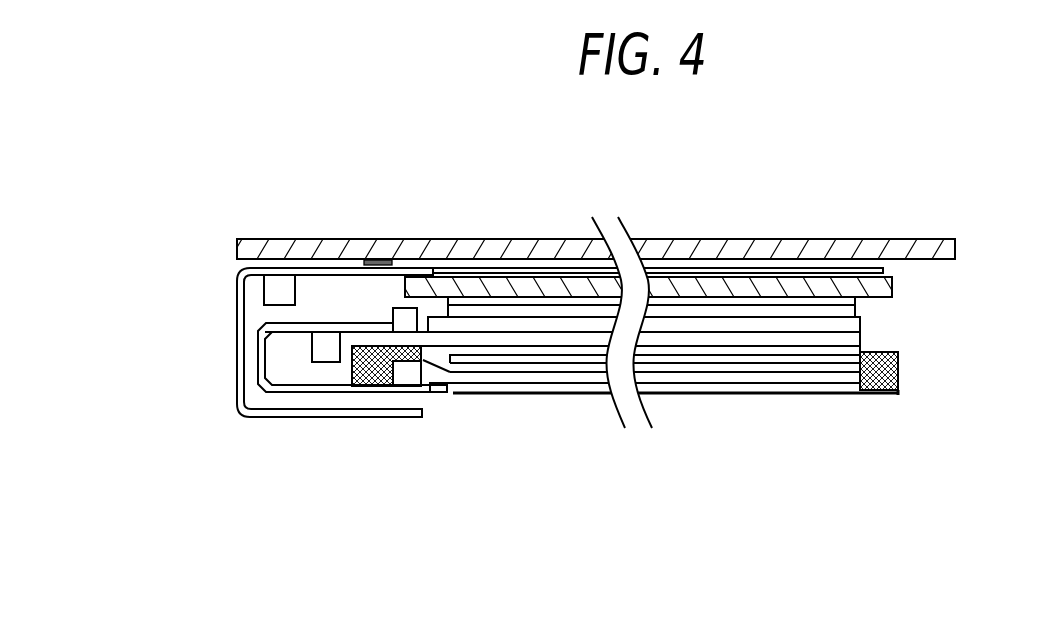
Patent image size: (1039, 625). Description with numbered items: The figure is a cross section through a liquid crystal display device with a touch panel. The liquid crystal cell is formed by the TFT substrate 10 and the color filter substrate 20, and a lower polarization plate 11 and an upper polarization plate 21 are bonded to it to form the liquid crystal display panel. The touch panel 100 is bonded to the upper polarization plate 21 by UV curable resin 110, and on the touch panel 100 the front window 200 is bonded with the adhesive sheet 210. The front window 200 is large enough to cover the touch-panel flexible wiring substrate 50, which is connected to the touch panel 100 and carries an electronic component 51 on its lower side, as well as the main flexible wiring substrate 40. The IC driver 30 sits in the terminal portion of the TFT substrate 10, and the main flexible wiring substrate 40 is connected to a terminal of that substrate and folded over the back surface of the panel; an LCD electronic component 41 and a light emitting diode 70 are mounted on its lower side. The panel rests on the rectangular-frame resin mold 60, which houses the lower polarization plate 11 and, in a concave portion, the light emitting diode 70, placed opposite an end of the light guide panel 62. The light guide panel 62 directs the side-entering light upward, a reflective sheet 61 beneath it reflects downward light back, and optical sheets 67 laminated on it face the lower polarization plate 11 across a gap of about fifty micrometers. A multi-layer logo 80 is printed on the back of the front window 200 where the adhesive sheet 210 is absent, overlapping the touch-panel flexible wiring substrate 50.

The front window 200 is at (895, 239).
The adhesive sheet 210 is at (884, 271).
The touch panel 100 is at (884, 288).
The UV curable resin 110 is at (843, 302).
The upper polarization plate 21 is at (845, 313).
The color filter substrate 20 is at (852, 327).
The TFT substrate 10 is at (850, 343).
The lower polarization plate 11 is at (705, 352).
The light guide panel 62 is at (530, 383).
The optical sheets 67 is at (838, 372).
The reflective sheet 61 is at (887, 396).
The resin mold 60 is at (368, 365).
The light emitting diode 70 is at (416, 378).
The IC driver 30 is at (412, 318).
The LCD electronic component 41 is at (327, 345).
The logo 80 is at (379, 260).
The main flexible wiring substrate 40 is at (290, 392).
The touch-panel flexible wiring substrate 50 is at (240, 274).
The electronic component 51 is at (279, 292).